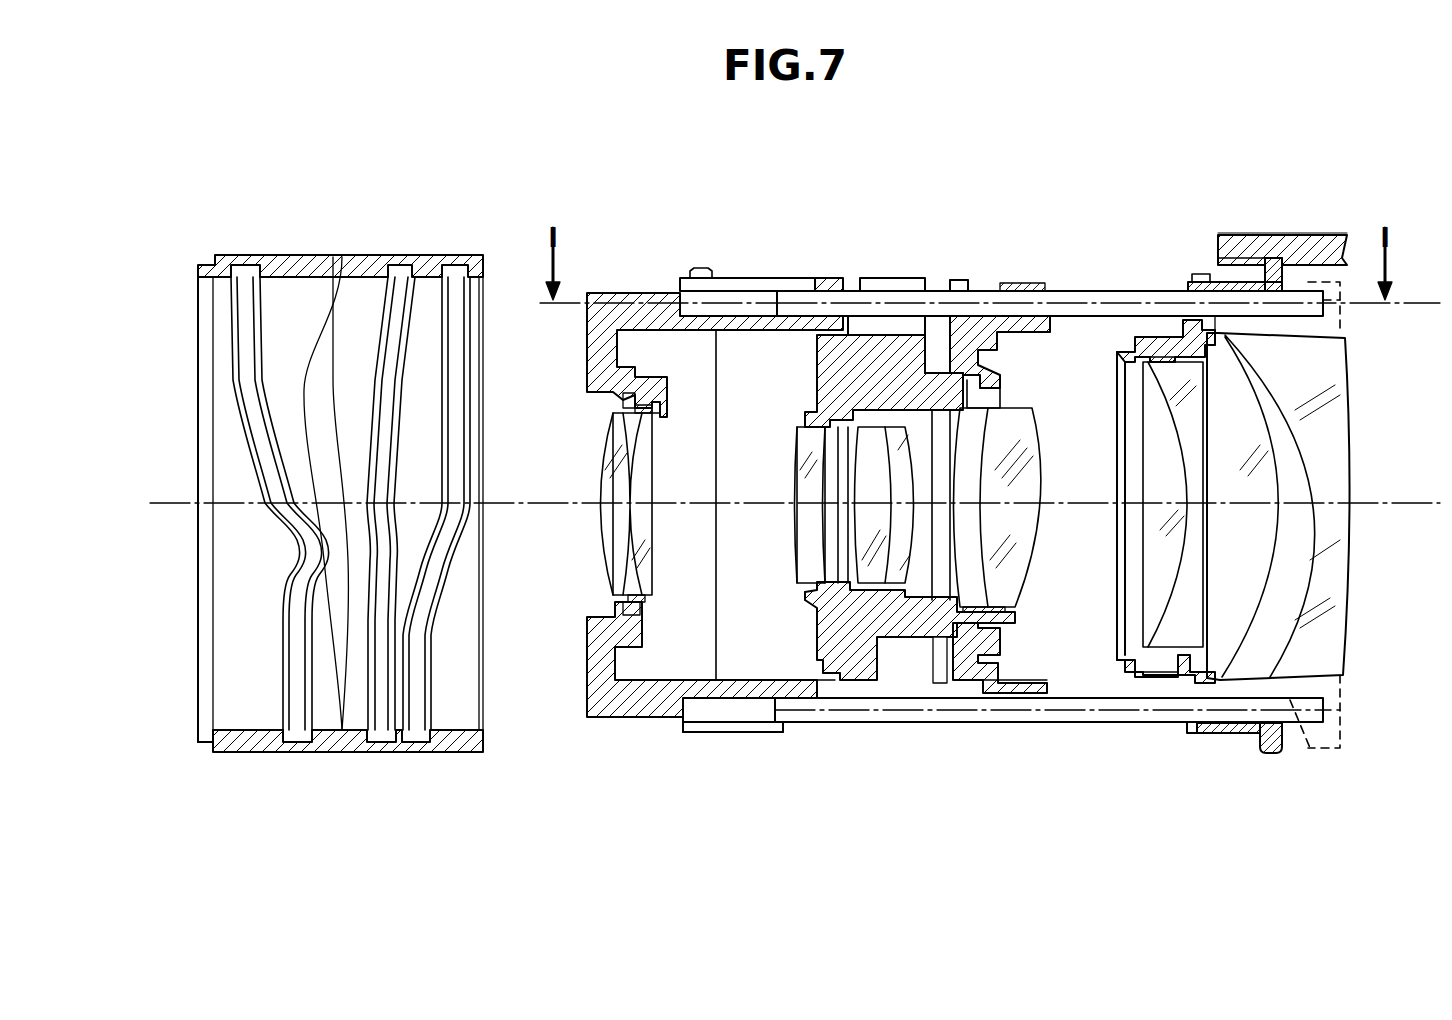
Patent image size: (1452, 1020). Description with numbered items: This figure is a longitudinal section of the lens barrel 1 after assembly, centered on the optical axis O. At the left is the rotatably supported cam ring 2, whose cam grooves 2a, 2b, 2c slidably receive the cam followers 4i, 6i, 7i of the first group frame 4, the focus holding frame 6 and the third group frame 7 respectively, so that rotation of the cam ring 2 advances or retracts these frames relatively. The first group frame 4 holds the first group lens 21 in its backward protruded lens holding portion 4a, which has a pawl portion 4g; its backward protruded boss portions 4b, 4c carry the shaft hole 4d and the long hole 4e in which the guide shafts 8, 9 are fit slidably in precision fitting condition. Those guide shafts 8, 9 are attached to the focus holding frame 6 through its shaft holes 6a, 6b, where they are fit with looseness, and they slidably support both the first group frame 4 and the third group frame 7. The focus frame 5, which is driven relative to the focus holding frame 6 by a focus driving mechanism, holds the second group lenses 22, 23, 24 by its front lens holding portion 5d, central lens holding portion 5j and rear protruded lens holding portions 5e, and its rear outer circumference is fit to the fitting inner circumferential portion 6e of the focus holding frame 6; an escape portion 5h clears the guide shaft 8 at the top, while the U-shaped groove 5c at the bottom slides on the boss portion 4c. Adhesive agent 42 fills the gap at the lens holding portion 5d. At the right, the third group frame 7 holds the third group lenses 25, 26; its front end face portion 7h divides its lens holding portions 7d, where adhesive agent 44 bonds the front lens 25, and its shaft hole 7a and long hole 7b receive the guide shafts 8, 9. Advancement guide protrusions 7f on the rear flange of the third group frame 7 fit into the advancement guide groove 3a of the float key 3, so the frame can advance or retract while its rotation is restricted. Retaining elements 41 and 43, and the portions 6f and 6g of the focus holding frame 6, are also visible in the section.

The lens barrel 1 is at (1330, 218).
The cam ring 2 is at (361, 448).
The cam groove 2a is at (262, 315).
The cam groove 2b is at (410, 315).
The cam groove 2c is at (470, 325).
The float key 3 is at (1282, 206).
The advancement guide groove 3a is at (1262, 258).
The first group frame 4 is at (715, 502).
The lens holding portion 4a is at (718, 390).
The boss portion 4b is at (714, 278).
The boss portion 4c is at (790, 734).
The shaft hole 4d is at (822, 284).
The long hole 4e is at (838, 698).
The pawl portion 4g is at (657, 413).
The cam follower 4i is at (694, 270).
The focus frame 5 is at (863, 492).
The U-shaped groove 5c is at (856, 700).
The lens holding portion 5d is at (812, 600).
The protruded lens holding portion 5e is at (950, 690).
The escape portion 5h is at (876, 314).
The lens holding portion 5j is at (876, 640).
The focus holding frame 6 is at (1002, 495).
The shaft hole 6a is at (1012, 286).
The shaft hole 6b is at (1040, 724).
The fitting inner circumferential portion 6e is at (958, 316).
The flange of third lens frame 6f is at (1052, 300).
The lower flange of third lens frame 6g is at (1012, 740).
The cam follower 6i is at (955, 278).
The third group frame 7 is at (1194, 462).
The shaft hole 7a is at (1208, 322).
The long hole 7b is at (1198, 735).
The lens holding portion 7d is at (1154, 700).
The advancement guide protrusion 7f is at (1273, 258).
The front end face portion 7h is at (1113, 430).
The cam follower 7i is at (1199, 274).
The guide shaft 8 is at (1120, 291).
The guide shaft 9 is at (1166, 723).
The first group lens 21 is at (607, 570).
The second group lens (front) 22 is at (812, 540).
The second group lens (middle) 23 is at (905, 545).
The second group lens (rear) 24 is at (1033, 540).
The third group lens (front) 25 is at (1252, 600).
The third group lens (rear) 26 is at (1346, 620).
The retaining ring 41 is at (625, 405).
The adhesive agent 42 is at (805, 593).
The retaining ring 43 is at (1008, 612).
The adhesive agent 44 is at (1118, 650).
The optical axis O is at (158, 500).